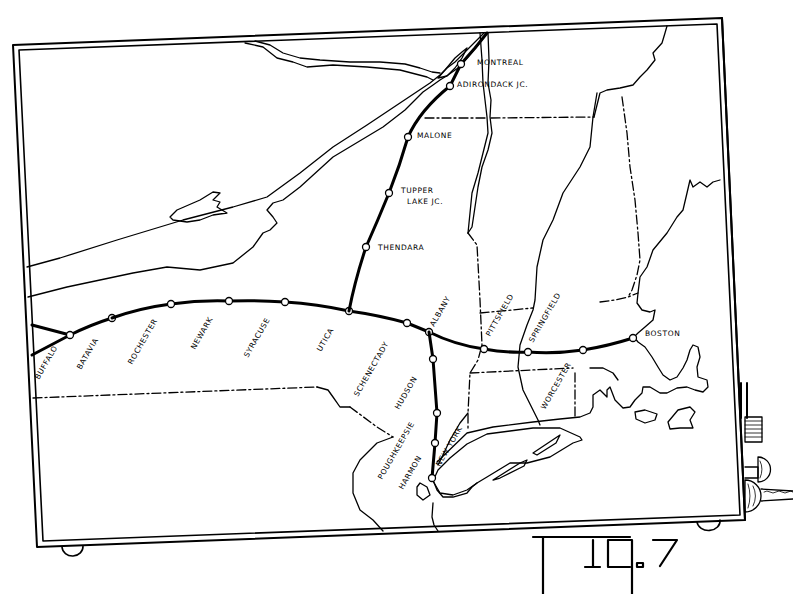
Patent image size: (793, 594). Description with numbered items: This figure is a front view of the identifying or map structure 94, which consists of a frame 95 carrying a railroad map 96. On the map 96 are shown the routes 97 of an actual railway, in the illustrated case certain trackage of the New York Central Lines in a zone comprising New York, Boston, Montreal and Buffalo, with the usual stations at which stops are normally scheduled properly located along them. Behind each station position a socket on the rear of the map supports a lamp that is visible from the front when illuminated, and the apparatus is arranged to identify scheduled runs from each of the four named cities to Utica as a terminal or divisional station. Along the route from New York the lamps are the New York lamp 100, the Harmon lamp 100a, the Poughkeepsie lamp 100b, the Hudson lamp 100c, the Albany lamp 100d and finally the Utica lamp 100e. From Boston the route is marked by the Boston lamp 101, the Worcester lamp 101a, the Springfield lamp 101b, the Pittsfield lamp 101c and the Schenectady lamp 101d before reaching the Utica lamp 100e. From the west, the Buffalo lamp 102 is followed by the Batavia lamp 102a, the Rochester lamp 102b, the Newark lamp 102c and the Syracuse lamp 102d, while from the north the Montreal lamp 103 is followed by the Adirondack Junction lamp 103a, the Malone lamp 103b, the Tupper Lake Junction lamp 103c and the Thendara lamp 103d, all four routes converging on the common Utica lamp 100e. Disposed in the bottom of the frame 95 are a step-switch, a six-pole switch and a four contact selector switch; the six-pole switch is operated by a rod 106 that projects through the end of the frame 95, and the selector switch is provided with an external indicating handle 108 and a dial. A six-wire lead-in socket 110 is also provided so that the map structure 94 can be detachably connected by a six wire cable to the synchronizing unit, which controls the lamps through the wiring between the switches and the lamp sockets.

The identifying or map structure 94 is at (553, 26).
The frame 95 is at (690, 6).
The railroad map 96 is at (708, 72).
The routes 97 is at (101, 322).
The New York lamp 100 is at (435, 478).
The Harmon lamp 100a is at (468, 410).
The Poughkeepsie lamp 100b is at (437, 412).
The Hudson lamp 100c is at (437, 359).
The Albany lamp 100d is at (429, 335).
The Utica lamp 100e is at (348, 314).
The Boston lamp 101 is at (634, 336).
The Worcester lamp 101a is at (585, 349).
The Springfield lamp 101b is at (530, 351).
The Pittsfield lamp 101c is at (486, 348).
The Schenectady lamp 101d is at (407, 321).
The Buffalo lamp 102 is at (70, 331).
The Batavia lamp 102a is at (111, 316).
The Rochester lamp 102b is at (171, 302).
The Newark lamp 102c is at (229, 300).
The Syracuse lamp 102d is at (285, 301).
The Montreal lamp 103 is at (459, 61).
The Adirondack Jct lamp 103a is at (449, 88).
The Malone lamp 103b is at (409, 140).
The Tupper Lake Jct lamp 103c is at (391, 196).
The Thendara lamp 103d is at (367, 249).
The rod 106 is at (757, 461).
The external indicating handle 108 is at (755, 416).
The six-wire lead-in socket 110 is at (753, 512).